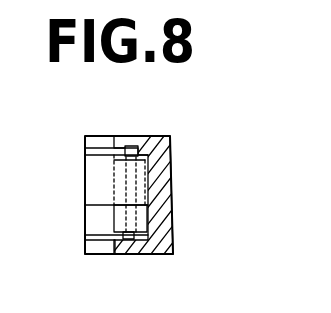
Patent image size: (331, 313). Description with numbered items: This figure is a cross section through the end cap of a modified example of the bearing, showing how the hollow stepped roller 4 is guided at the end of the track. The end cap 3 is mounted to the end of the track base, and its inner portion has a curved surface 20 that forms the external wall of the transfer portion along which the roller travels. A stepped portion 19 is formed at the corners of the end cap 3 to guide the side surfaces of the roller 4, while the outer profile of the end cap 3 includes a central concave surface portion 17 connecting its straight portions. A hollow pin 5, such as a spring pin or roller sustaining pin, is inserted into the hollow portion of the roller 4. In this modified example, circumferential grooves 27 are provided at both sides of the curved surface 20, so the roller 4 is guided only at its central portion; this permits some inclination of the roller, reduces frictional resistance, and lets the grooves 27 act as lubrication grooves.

The end cap 3 is at (96, 135).
The hollow pin 5 is at (128, 135).
The stepped portion 19 is at (92, 150).
The circumferential grooves 27 is at (92, 173).
The hollow stepped roller 4 is at (114, 200).
The curved surface 20 is at (85, 238).
The central concave surface portion 17 is at (104, 248).